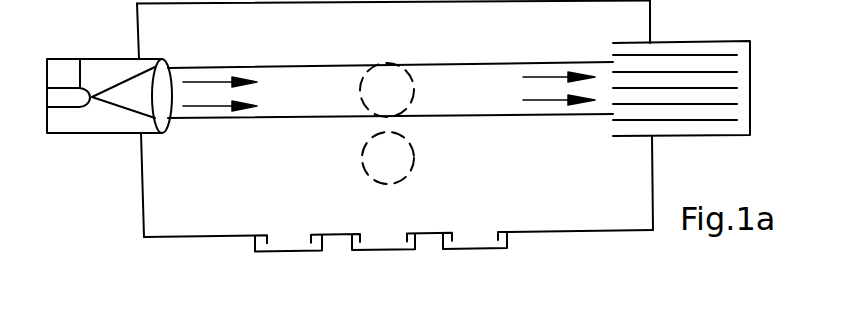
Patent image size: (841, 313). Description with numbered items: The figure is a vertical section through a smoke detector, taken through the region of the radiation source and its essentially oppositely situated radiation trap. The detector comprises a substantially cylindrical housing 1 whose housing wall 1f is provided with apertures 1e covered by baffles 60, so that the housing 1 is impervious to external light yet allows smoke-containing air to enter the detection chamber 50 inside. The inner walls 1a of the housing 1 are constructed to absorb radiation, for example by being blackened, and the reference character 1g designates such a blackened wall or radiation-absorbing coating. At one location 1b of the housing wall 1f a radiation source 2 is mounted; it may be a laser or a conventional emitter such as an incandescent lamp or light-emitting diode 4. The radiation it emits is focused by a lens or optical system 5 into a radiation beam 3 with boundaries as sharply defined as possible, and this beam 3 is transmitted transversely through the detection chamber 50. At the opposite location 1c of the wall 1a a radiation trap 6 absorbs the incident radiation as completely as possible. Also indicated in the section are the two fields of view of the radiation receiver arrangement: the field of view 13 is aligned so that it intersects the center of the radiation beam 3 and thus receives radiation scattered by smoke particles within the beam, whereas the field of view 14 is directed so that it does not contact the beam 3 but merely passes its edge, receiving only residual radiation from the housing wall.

The housing 1 is at (142, 200).
The inner wall 1a is at (338, 4).
The location of radiation source 1b is at (138, 135).
The location of radiation trap 1c is at (657, 140).
The apertures 1e is at (288, 242).
The housing wall 1f is at (198, 238).
The blackened wall 1g is at (578, 229).
The radiation source 2 is at (80, 135).
The radiation beam 3 is at (390, 90).
The incandescent lamp or light-emitting diode 4 is at (86, 96).
The lens or optical system 5 is at (159, 89).
The radiation trap 6 is at (667, 63).
The field of view 13 is at (387, 90).
The field of view 14 is at (388, 158).
The detection chamber 50 is at (510, 33).
The baffles 60 is at (437, 245).